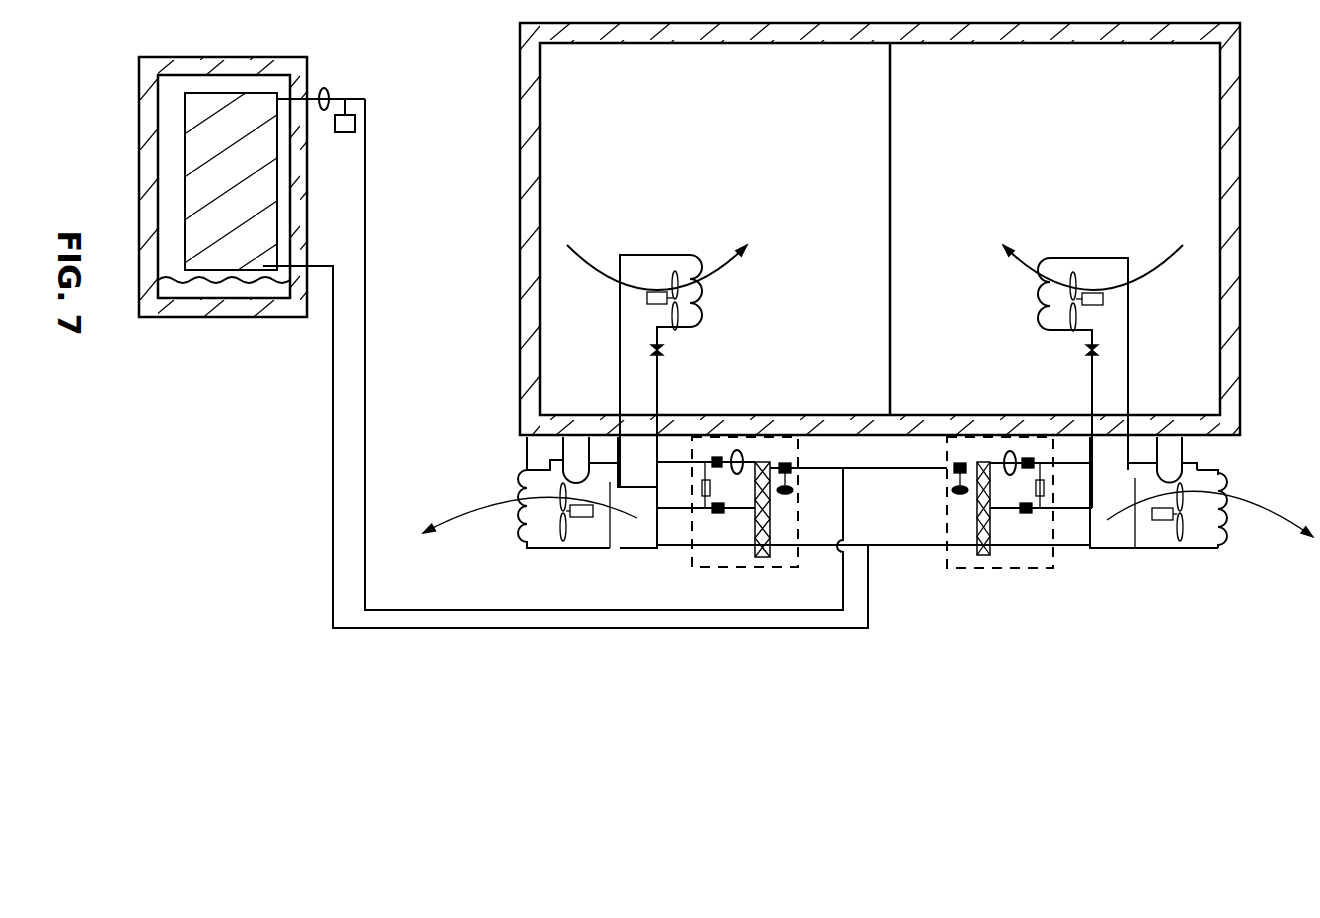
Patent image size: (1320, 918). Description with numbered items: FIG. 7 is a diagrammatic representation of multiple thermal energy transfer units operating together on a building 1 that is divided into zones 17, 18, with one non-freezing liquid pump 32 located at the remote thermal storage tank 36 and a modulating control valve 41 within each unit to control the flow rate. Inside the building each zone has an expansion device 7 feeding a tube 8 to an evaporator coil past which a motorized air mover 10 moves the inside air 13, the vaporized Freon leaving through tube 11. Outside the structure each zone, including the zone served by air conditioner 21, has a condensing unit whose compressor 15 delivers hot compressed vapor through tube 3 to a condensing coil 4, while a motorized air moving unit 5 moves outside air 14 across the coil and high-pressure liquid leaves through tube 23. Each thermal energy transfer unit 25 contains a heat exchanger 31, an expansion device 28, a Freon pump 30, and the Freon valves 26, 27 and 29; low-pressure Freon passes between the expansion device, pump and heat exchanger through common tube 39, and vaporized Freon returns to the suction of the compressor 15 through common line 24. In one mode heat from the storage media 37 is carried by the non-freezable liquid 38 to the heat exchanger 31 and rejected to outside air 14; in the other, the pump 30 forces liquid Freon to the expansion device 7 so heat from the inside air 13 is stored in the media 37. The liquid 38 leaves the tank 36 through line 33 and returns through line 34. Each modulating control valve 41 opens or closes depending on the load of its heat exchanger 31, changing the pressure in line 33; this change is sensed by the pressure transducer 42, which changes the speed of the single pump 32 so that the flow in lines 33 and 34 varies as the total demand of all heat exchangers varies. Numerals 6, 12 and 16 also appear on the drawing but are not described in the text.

The building 1 is at (1230, 225).
The tube 3 is at (1197, 452).
The condensing coil 4 is at (1215, 530).
The motorized air moving unit 5 is at (1183, 533).
The evaporator coil 6 is at (1040, 325).
The expansion device 7 is at (1080, 350).
The tube 8 is at (1073, 330).
The motorized air mover 10 is at (1103, 305).
The tube 11 is at (1128, 370).
The outdoor unit housing 12 is at (1218, 452).
The inside air 13 is at (1153, 275).
The outside air 14 is at (1315, 480).
The compressor 15 is at (1178, 443).
The air flow in first compartment 16 is at (595, 272).
The zone 17 is at (1137, 145).
The zone 18 is at (658, 145).
The air conditioner 21 is at (527, 448).
The tube 23 is at (1127, 548).
The common line 24 is at (1085, 545).
The thermal energy transfer unit 25 is at (1070, 545).
The valve 26 is at (1058, 540).
The valve 27 is at (1044, 500).
The expansion device 28 is at (1032, 512).
The valve 29 is at (1027, 470).
The pump 30 is at (1005, 476).
The heat exchanger 31 is at (977, 540).
The pump 32 is at (324, 110).
The tube 33 is at (359, 428).
The tube 34 is at (332, 463).
The thermal storage tank 36 is at (285, 310).
The thermal storage media 37 is at (228, 240).
The non-freezable liquid 38 is at (168, 256).
The tube 39 is at (1000, 462).
The modulating control valve 41 is at (785, 494).
The pressure transducer 42 is at (345, 134).